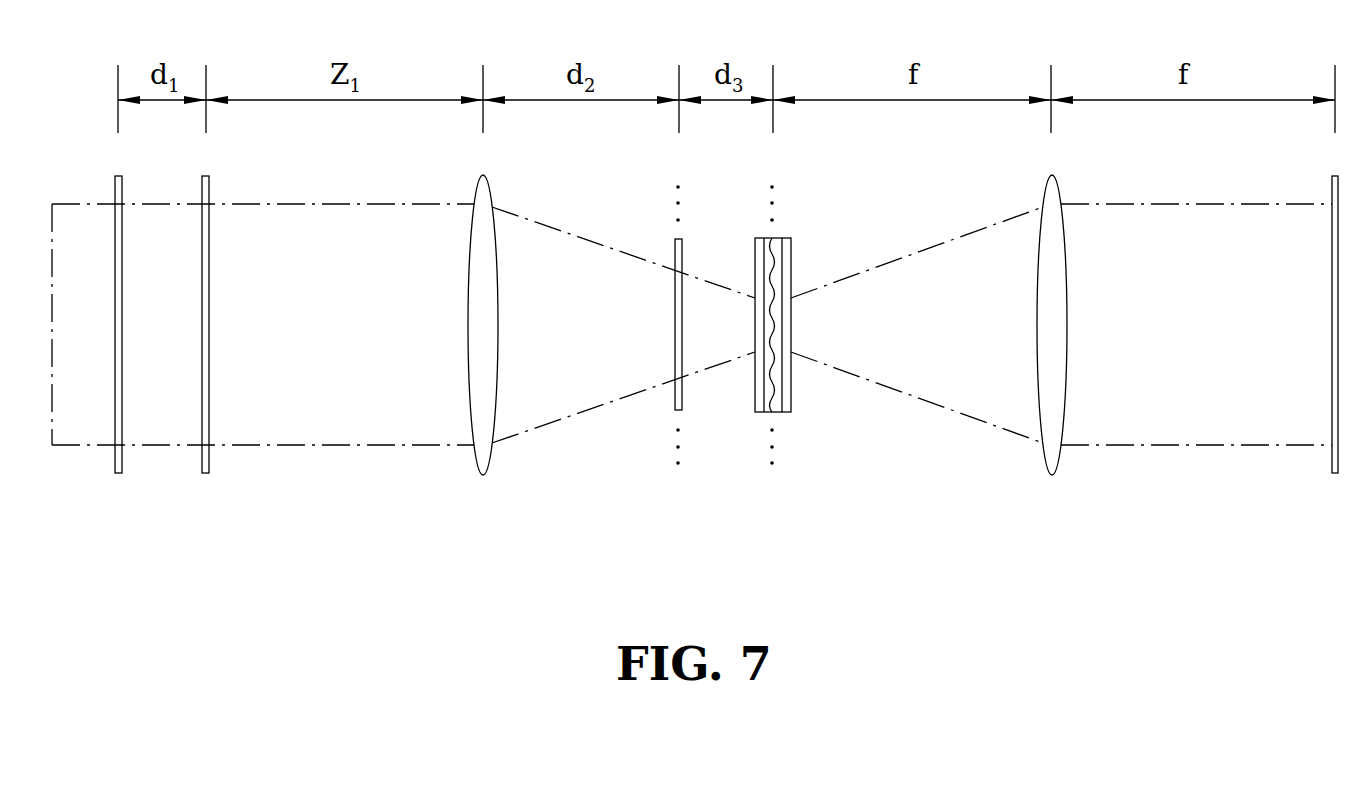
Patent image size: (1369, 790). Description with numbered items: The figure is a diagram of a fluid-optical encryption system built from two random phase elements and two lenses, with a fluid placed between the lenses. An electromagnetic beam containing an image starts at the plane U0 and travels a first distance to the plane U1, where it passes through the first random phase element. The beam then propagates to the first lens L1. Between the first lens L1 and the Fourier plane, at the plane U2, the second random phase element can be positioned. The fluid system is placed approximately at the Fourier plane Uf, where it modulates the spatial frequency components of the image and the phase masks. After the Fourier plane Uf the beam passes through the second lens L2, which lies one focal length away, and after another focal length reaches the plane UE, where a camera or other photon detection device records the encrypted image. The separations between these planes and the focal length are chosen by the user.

The input beam plane U0 is at (115, 359).
The first random phase element plane U1 is at (213, 359).
The first lens L1 is at (484, 358).
The second random phase element plane U2 is at (684, 363).
The Fourier plane Uf is at (773, 363).
The second lens L2 is at (1052, 358).
The output plane UE is at (1334, 359).